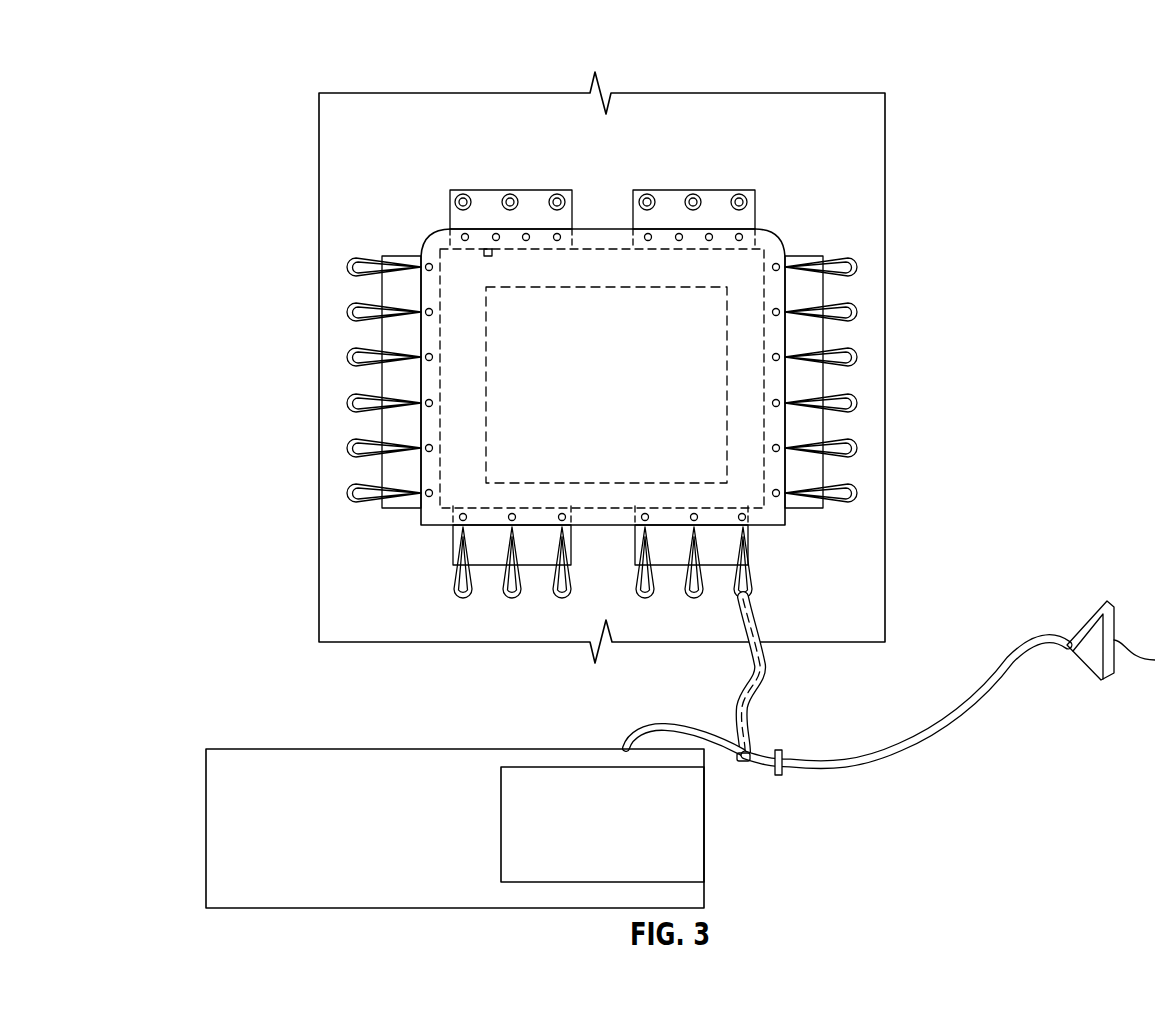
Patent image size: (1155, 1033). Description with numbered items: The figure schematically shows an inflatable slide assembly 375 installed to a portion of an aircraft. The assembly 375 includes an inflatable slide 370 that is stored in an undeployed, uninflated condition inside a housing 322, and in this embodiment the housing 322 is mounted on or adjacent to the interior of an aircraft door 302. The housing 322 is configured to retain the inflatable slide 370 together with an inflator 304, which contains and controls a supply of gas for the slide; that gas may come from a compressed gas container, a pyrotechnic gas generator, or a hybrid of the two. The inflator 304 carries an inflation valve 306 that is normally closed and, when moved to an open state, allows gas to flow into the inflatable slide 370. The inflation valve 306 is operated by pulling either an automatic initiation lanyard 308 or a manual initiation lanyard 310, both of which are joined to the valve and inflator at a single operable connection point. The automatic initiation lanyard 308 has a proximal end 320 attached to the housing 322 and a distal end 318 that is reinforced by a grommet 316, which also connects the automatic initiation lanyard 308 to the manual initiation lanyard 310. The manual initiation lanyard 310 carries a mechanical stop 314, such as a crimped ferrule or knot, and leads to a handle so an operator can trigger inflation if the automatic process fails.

The inflatable slide assembly 375 is at (328, 57).
The aircraft door 302 is at (338, 156).
The housing 322 is at (770, 233).
The inflatable slide 370 is at (728, 388).
The proximal end 320 is at (750, 564).
The automatic initiation lanyard 308 is at (762, 685).
The grommet 316 is at (742, 745).
The manual initiation lanyard 310 is at (940, 737).
The mechanical stop 314 is at (779, 776).
The distal end 318 is at (746, 762).
The inflator 304 is at (244, 748).
The inflation valve 306 is at (501, 823).